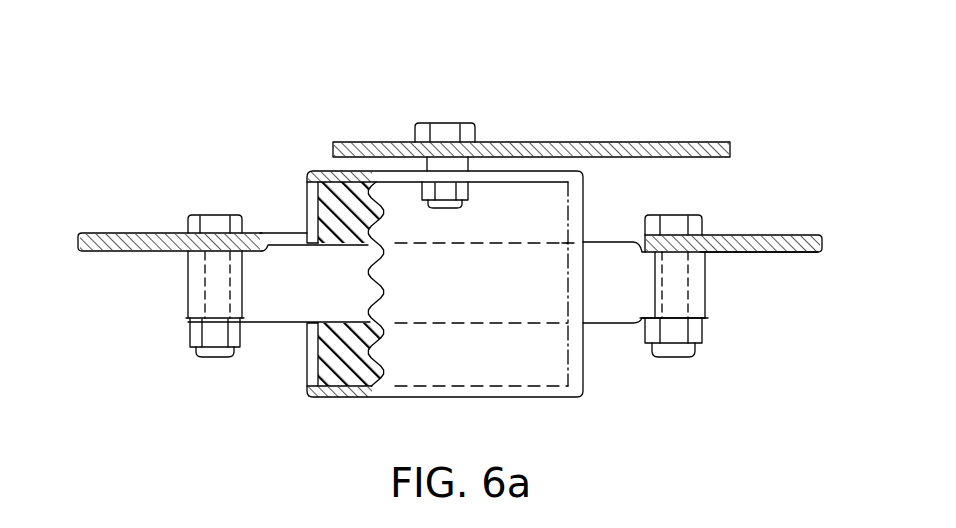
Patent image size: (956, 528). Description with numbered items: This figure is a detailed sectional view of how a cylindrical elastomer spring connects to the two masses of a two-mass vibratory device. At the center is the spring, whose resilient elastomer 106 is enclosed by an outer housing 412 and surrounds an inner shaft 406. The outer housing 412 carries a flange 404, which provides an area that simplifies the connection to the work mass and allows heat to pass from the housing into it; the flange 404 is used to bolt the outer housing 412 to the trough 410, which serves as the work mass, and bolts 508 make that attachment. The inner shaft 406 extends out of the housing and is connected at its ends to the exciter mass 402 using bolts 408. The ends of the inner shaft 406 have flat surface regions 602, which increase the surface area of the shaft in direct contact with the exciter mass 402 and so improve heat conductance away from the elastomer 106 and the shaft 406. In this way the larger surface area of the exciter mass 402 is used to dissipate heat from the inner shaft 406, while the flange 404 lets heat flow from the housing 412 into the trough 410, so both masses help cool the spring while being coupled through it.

The elastomer 106 is at (320, 358).
The exciter mass 402 is at (778, 253).
The flange 404 is at (545, 165).
The inner shaft 406 is at (283, 267).
The bolts 408 is at (693, 343).
The trough 410 is at (692, 142).
The outer housing 412 is at (583, 393).
The bolts 508 is at (443, 123).
The flat surface regions 602 is at (183, 250).